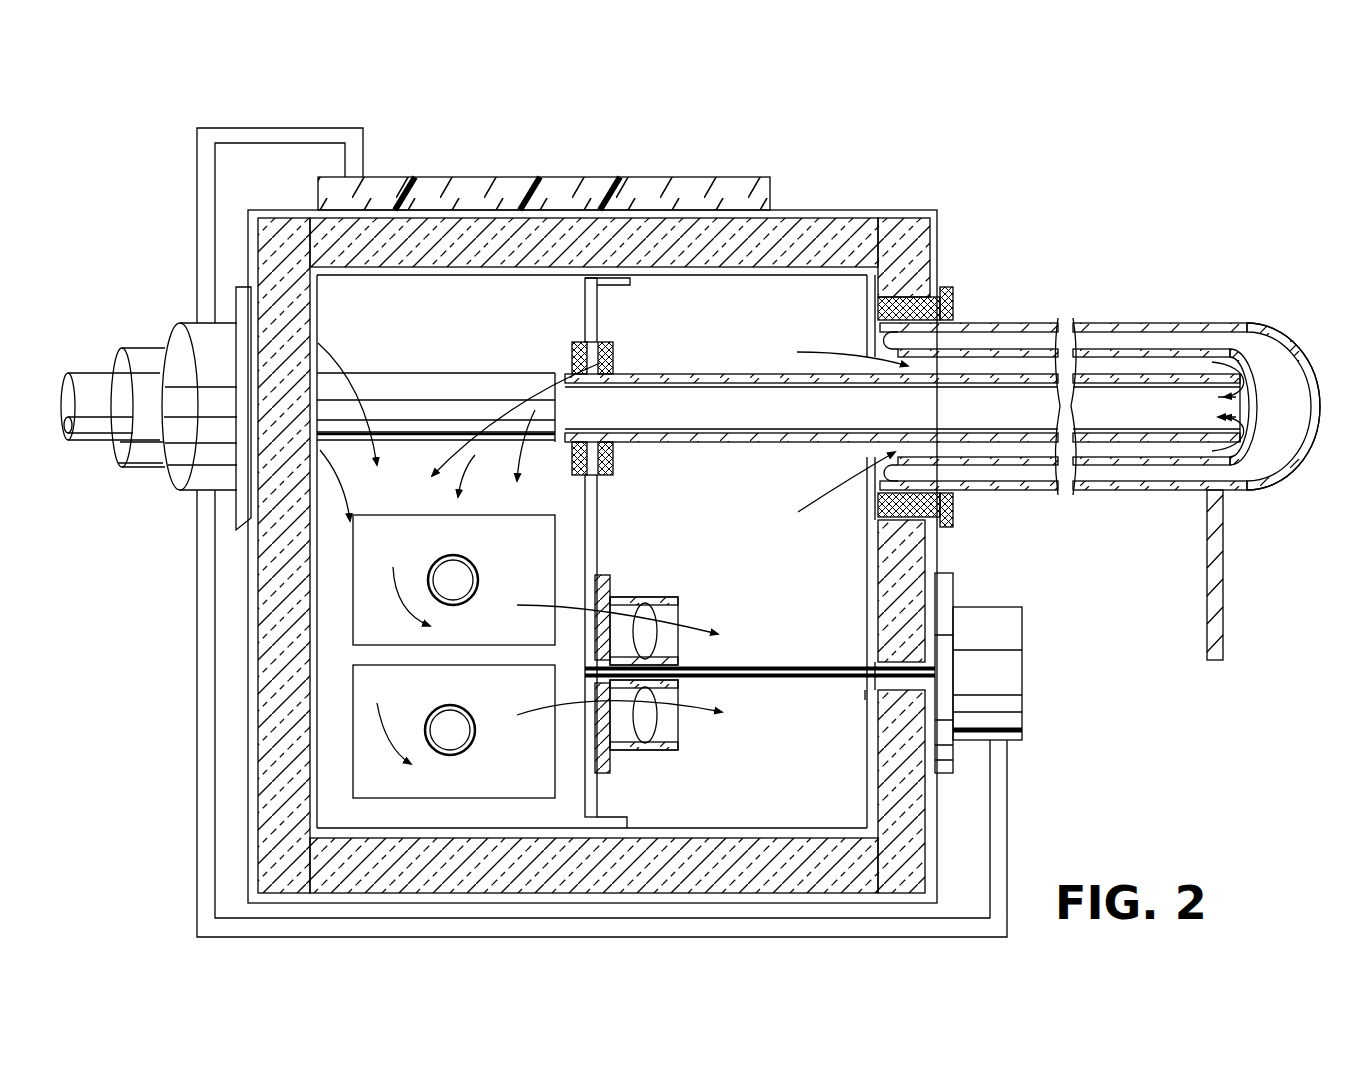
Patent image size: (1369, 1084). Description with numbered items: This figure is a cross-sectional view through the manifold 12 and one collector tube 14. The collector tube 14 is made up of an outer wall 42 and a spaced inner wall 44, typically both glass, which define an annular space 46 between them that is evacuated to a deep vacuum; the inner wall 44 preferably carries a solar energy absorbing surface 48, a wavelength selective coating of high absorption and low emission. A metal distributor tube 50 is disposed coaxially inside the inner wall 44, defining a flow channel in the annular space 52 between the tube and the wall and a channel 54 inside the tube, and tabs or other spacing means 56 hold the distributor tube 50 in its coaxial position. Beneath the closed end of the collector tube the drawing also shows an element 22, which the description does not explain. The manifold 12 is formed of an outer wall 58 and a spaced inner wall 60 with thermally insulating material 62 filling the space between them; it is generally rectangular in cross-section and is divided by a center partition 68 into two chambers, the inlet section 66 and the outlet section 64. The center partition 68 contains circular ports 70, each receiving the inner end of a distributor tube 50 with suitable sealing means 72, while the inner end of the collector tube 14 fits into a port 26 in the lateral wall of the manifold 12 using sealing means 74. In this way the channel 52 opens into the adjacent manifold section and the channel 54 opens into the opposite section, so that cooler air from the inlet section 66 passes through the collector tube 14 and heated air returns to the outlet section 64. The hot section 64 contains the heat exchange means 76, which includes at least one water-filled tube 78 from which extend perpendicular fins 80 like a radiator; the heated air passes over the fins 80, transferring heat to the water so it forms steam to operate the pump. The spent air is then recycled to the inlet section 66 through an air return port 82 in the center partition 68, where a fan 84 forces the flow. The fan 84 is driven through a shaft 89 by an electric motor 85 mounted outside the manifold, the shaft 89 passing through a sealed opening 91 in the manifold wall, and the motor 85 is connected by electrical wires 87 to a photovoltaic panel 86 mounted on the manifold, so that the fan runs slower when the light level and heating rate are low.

The manifold 12 is at (848, 172).
The collector tube 14 is at (150, 494).
The support rod 22 is at (1225, 590).
The port 26 is at (870, 453).
The outer wall 42 is at (962, 325).
The inner wall 44 is at (1003, 350).
The annular space 46 is at (1100, 330).
The solar energy absorbing surface 48 is at (1255, 333).
The distributor tube 50 is at (95, 373).
The annular space 52 is at (1166, 365).
The channel 54 is at (705, 437).
The spacing means 56 is at (1272, 455).
The outer wall 58 is at (938, 236).
The inner wall 60 is at (818, 280).
The thermally insulating material 62 is at (905, 232).
The outlet section 64 is at (441, 328).
The inlet section 66 is at (743, 535).
The center partition 68 is at (585, 306).
The port 70 is at (572, 357).
The sealing means 72 is at (613, 347).
The sealing means 74 is at (232, 528).
The heat exchange means 76 is at (460, 442).
The tube 78 is at (436, 566).
The fins 80 is at (534, 553).
The air return port 82 is at (614, 600).
The fan 84 is at (650, 630).
The electric motor 85 is at (1025, 690).
The photovoltaic panel 86 is at (482, 177).
The electrical wires 87 is at (365, 150).
The shaft 89 is at (780, 682).
The opening 91 is at (868, 690).